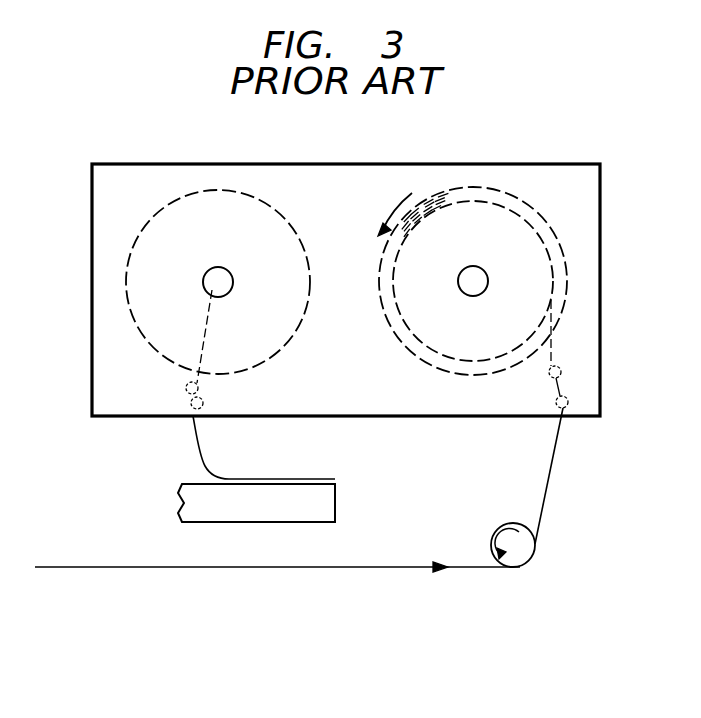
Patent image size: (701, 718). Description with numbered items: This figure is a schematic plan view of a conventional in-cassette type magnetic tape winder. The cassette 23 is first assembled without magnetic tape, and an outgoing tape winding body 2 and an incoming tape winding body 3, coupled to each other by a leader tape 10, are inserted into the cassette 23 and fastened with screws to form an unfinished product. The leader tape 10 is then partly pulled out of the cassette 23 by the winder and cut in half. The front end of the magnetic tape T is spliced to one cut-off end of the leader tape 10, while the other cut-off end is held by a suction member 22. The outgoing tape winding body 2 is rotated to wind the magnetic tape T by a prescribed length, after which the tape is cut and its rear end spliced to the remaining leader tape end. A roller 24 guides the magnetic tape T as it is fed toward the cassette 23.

The cassette 23 is at (588, 140).
The incoming tape winding body 3 is at (151, 219).
The outgoing tape winding body 2 is at (547, 221).
The leader tape 10 is at (213, 473).
The suction member 22 is at (335, 508).
The roller 24 is at (520, 530).
The magnetic tape T is at (551, 487).